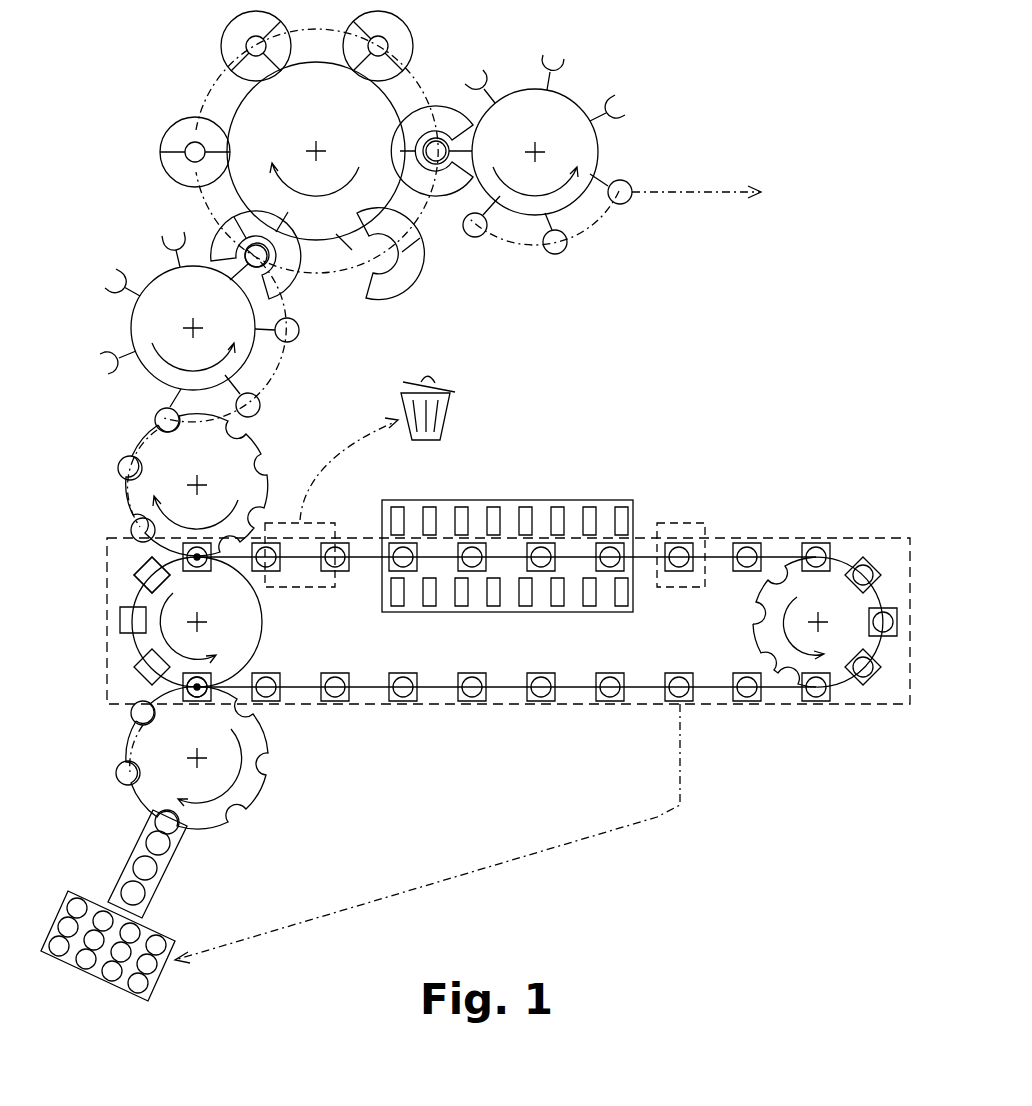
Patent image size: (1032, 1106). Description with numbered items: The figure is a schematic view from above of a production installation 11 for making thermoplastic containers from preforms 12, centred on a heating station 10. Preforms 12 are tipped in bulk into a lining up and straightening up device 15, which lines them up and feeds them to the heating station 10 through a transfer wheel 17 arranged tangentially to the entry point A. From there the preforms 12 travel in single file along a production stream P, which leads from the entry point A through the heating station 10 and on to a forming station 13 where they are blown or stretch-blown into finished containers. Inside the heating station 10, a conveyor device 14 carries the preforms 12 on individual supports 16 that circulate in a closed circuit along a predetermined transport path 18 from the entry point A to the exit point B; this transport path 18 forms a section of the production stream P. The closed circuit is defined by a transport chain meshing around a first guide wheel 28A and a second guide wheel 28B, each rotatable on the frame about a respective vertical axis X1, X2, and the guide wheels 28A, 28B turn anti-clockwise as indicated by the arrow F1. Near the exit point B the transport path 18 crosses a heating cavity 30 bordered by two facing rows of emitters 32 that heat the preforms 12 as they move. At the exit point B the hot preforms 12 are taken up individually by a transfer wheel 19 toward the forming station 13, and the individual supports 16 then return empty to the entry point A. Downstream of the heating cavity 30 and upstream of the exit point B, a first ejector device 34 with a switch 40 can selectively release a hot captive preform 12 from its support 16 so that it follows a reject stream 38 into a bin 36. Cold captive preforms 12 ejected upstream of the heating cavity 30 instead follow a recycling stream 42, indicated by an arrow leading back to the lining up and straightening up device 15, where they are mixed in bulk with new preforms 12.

The heating station 10 is at (750, 452).
The production installation 11 is at (75, 185).
The preform 12 is at (118, 780).
The forming station 13 is at (185, 65).
The conveyor device 14 is at (783, 545).
The lining up and straightening up device 15 is at (88, 893).
The individual support 16 is at (878, 572).
The transfer wheel 17 is at (245, 812).
The transport path 18 is at (772, 690).
The transfer wheel 19 is at (165, 458).
The first guide wheel 28A is at (157, 640).
The second guide wheel 28B is at (835, 598).
The heating cavity 30 is at (527, 492).
The emitter 32 is at (555, 512).
The first ejector device 34 is at (290, 510).
The bin 36 is at (447, 425).
The reject stream 38 is at (345, 445).
The switch 40 is at (668, 515).
The recycling stream 42 is at (657, 815).
The vertical axis of first guide wheel X1 is at (210, 612).
The vertical axis of second guide wheel X2 is at (838, 650).
The entry point A is at (192, 690).
The exit point B is at (185, 556).
The arrow indicating direction of rotation F1 is at (187, 578).
The production stream P is at (288, 378).